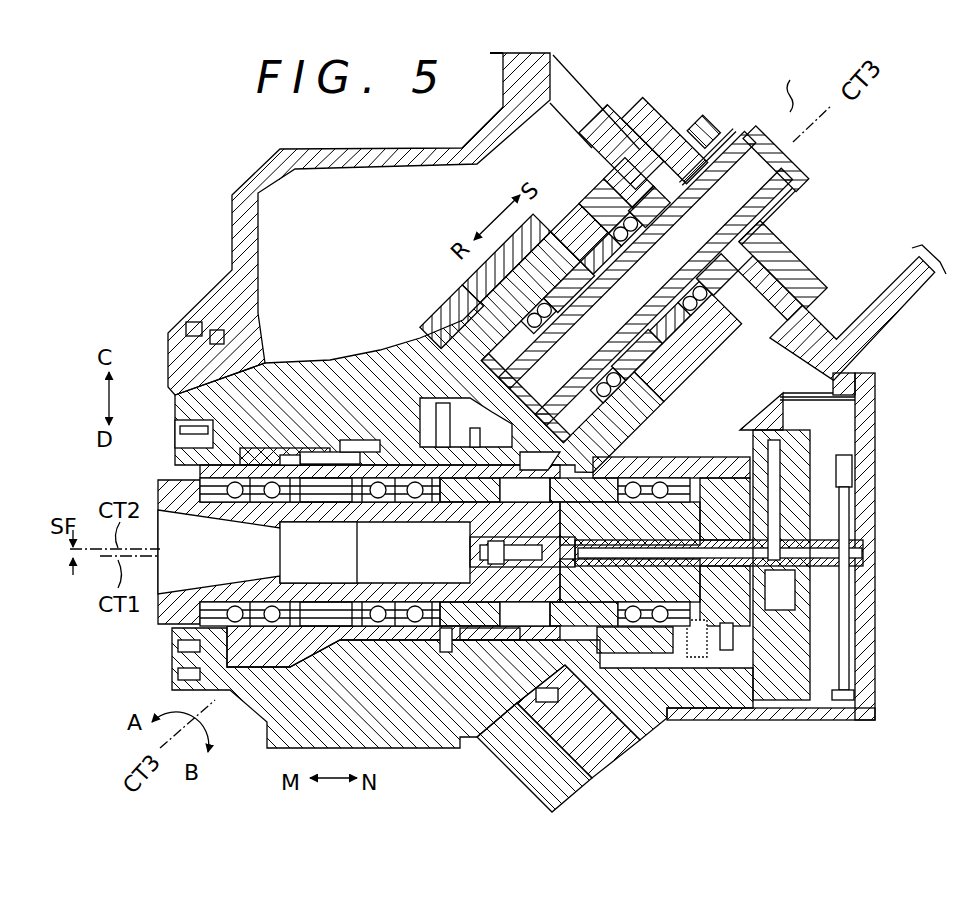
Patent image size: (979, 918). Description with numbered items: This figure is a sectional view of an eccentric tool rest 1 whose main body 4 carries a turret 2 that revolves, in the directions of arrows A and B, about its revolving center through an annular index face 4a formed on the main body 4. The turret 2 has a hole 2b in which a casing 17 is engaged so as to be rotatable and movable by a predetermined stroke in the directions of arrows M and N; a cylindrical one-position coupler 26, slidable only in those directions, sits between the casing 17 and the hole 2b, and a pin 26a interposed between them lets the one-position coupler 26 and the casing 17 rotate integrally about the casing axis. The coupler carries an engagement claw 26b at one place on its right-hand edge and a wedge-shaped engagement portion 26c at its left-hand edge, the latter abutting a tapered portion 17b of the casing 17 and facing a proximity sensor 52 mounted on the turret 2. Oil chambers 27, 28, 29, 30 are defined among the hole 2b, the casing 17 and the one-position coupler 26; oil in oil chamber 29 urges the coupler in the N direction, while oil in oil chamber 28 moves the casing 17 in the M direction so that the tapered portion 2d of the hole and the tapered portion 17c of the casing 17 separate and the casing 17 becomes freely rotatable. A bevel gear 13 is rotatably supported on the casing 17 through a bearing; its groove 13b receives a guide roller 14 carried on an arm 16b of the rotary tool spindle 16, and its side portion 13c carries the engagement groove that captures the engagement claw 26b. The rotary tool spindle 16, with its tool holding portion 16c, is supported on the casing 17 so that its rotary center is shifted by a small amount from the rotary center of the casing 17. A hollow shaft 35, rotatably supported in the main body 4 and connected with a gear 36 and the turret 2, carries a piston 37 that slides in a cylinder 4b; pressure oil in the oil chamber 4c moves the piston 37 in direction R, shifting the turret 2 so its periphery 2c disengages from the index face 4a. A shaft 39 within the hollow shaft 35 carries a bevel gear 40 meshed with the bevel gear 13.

The eccentric tool rest 1 is at (797, 79).
The turret 2 is at (412, 355).
The hole 2b is at (347, 460).
The periphery 2c is at (190, 366).
The tapered portion 2d is at (300, 447).
The main body 4 is at (232, 190).
The annular index face 4a is at (258, 352).
The cylinder 4b is at (698, 392).
The oil chamber 4c is at (725, 360).
The bevel gear 13 is at (640, 460).
The groove 13b is at (700, 658).
The side portion 13c is at (545, 598).
The guide roller 14 is at (735, 660).
The rotary tool spindle 16 is at (162, 606).
The arm 16b is at (748, 655).
The tool holding portion 16c is at (262, 530).
The casing 17 is at (165, 463).
The tapered portion 17b is at (490, 645).
The tapered portion 17c is at (262, 462).
The one-position coupler 26 is at (472, 652).
The pin 26a is at (545, 735).
The engagement claw 26b is at (600, 690).
The engagement portion 26c is at (422, 642).
The oil chamber 27 is at (185, 445).
The oil chamber 28 is at (322, 445).
The oil chamber 29 is at (478, 642).
The oil chamber 30 is at (548, 468).
The hollow shaft 35 is at (668, 302).
The gear 36 is at (800, 262).
The piston 37 is at (586, 206).
The shaft 39 is at (782, 174).
The bevel gear 40 is at (462, 318).
The proximity sensor 52 is at (405, 440).